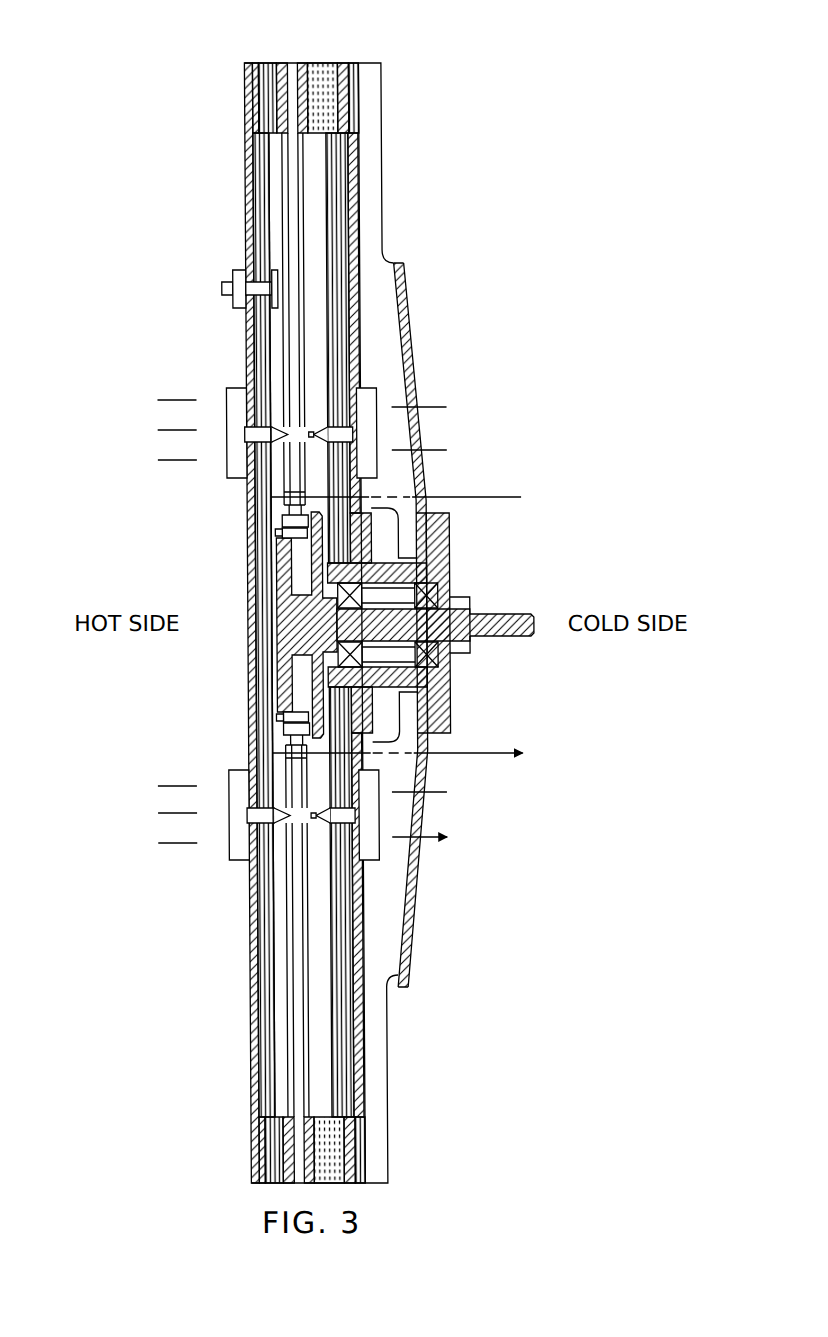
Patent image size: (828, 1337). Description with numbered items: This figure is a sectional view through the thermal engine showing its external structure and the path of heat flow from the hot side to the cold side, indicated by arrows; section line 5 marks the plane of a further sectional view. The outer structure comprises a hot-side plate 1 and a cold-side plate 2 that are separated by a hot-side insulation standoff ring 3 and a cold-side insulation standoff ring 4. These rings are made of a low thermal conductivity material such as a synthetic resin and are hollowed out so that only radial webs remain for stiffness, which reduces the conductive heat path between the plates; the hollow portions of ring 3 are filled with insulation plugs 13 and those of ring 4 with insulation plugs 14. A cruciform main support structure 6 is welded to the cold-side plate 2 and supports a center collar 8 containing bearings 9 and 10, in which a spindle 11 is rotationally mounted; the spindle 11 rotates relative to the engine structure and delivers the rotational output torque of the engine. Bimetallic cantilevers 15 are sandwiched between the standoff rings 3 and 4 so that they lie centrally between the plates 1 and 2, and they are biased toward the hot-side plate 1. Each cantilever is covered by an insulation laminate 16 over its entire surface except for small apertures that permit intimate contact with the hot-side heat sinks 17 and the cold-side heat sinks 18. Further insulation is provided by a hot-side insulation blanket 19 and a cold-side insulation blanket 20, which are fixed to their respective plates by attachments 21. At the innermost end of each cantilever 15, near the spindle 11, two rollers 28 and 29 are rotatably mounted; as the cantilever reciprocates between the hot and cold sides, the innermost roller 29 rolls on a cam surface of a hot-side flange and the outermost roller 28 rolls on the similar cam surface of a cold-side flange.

The hot-side plate 1 is at (244, 953).
The cold-side plate 2 is at (356, 1040).
The hot-side insulation standoff ring 3 is at (255, 63).
The cold-side insulation standoff ring 4 is at (343, 63).
The section line 5- 5 is at (414, 624).
The cruciform main support structure 6 is at (398, 262).
The center collar 8 is at (431, 572).
The bearing 9 is at (354, 655).
The bearing 10 is at (436, 653).
The spindle 11 is at (278, 637).
The insulation plugs 13 is at (268, 68).
The insulation plugs 14 is at (317, 70).
The bimetallic cantilevers 15 is at (288, 245).
The insulation laminate 16 is at (301, 300).
The hot-side heat sinks 17 is at (223, 390).
The cold-side heat sinks 18 is at (373, 390).
The hot-side insulation blanket 19 is at (256, 178).
The cold-side insulation blanket 20 is at (344, 180).
The attachments 21 is at (226, 285).
The roller 28 is at (280, 519).
The roller 29 is at (275, 532).